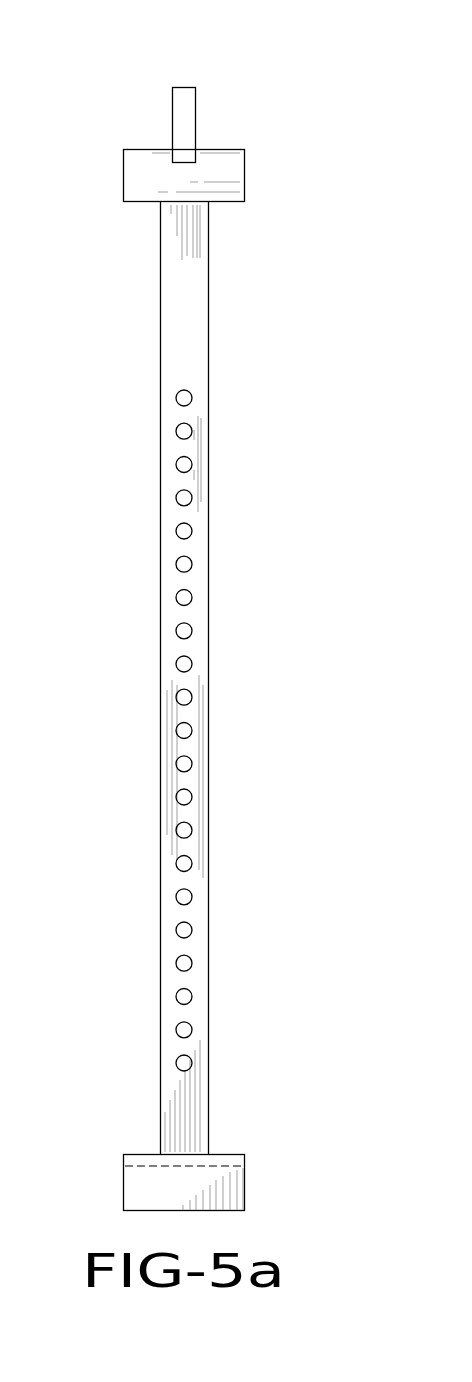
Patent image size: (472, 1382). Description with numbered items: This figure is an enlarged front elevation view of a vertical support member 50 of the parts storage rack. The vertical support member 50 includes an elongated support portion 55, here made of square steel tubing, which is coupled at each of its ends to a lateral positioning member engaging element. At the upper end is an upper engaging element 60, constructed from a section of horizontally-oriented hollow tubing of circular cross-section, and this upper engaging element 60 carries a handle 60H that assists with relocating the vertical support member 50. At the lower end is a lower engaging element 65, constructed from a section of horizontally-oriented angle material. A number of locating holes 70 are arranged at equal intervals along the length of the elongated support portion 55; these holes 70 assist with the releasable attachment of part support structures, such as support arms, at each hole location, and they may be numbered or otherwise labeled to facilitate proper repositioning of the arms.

The vertical support member 50 is at (312, 247).
The elongated support portion 55 is at (180, 363).
The upper lateral positioning member engaging element 60 is at (150, 172).
The handle 60H is at (183, 118).
The lower lateral positioning member engaging element 65 is at (228, 1183).
The locating holes 70 is at (188, 599).